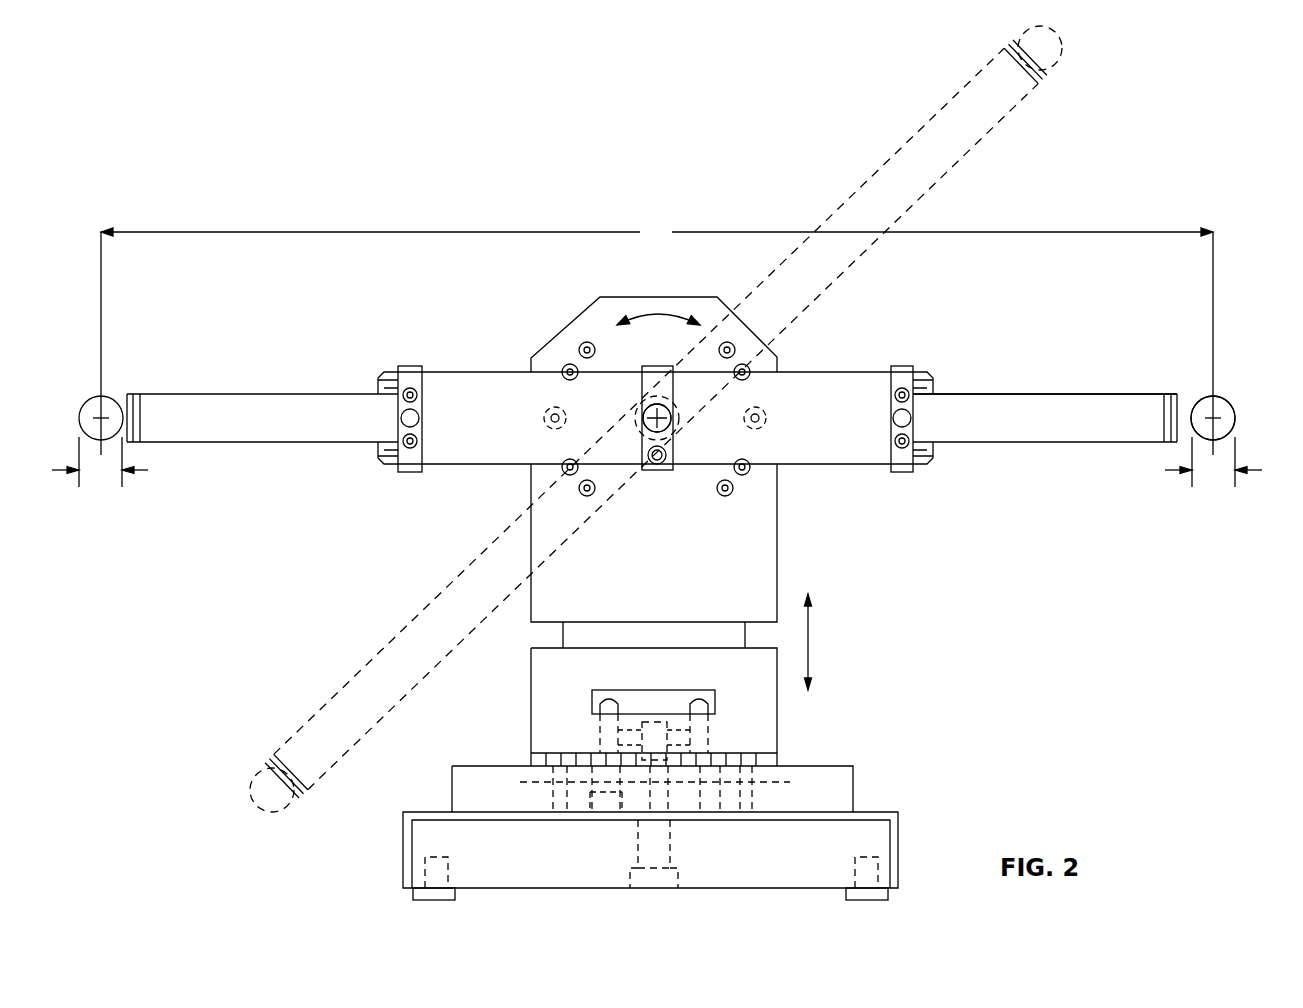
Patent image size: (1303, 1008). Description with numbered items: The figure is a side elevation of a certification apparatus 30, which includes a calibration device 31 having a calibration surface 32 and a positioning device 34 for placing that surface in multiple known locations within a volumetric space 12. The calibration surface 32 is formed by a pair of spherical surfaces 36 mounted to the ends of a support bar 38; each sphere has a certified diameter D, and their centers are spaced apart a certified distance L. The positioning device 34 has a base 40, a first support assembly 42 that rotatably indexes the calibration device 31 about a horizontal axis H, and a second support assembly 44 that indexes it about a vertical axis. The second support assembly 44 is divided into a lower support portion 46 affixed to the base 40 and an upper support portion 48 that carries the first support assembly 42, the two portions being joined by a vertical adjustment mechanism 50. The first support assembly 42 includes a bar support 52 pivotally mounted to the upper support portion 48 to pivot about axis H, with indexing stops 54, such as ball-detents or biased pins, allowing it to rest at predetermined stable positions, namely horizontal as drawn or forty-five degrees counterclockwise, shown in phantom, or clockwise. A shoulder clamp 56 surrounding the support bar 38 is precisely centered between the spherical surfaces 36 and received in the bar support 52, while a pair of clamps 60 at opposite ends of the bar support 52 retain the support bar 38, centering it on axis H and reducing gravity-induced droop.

The volumetric space 12 is at (1000, 600).
The certification apparatus 30 is at (655, 392).
The calibration device 31 is at (1015, 395).
The calibration surface 32 is at (1235, 405).
The positioning device 34 is at (699, 615).
The spherical surfaces 36 is at (80, 413).
The support bar 38 is at (237, 442).
The base 40 is at (900, 815).
The first support assembly 42 is at (557, 335).
The second support assembly 44 is at (800, 766).
The lower support portion 46 is at (778, 703).
The upper support portion 48 is at (778, 517).
The vertical adjustment mechanism 50 is at (562, 640).
The bar support 52 is at (490, 370).
The indexing stops 54 is at (547, 428).
The shoulder clamp 56 is at (657, 472).
The clamps 60 is at (408, 472).
The horizontal axis H is at (673, 427).
The certified distance L is at (657, 338).
The certified diameter D is at (657, 462).